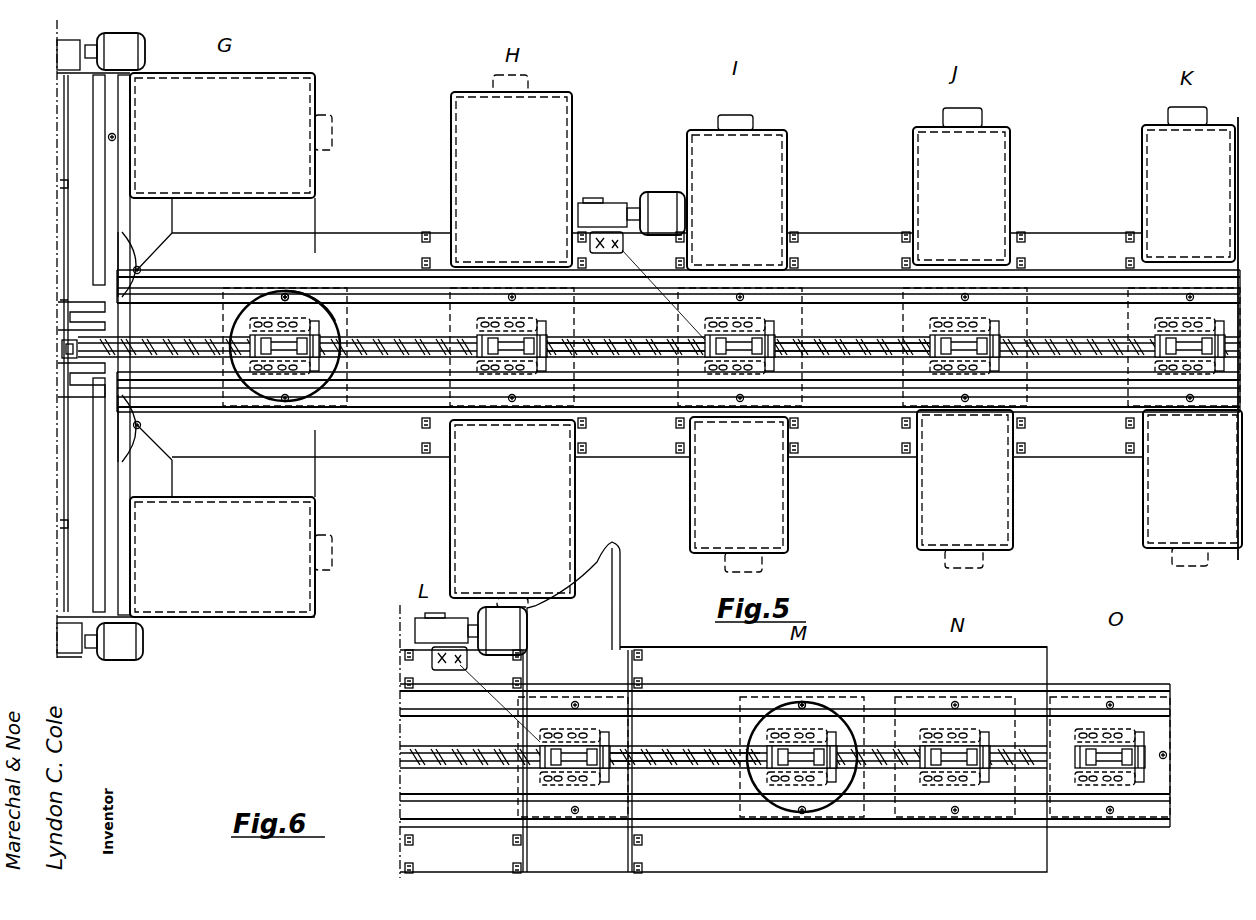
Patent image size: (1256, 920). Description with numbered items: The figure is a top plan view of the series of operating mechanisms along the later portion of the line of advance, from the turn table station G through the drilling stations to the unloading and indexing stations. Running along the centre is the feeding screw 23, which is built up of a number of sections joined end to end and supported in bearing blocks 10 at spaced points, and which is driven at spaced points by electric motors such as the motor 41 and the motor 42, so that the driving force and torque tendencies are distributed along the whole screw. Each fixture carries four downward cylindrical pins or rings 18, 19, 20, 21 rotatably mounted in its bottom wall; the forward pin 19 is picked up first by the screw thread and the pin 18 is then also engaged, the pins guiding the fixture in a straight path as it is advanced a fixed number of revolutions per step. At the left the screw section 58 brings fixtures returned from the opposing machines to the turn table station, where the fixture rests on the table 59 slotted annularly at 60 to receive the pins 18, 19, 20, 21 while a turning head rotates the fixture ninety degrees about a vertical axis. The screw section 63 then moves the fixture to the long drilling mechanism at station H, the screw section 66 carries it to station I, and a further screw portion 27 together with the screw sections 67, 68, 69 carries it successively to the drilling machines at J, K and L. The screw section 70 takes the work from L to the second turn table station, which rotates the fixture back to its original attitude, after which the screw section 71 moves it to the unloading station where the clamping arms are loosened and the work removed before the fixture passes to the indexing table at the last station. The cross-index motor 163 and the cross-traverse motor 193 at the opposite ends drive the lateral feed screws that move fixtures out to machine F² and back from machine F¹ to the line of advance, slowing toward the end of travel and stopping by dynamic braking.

In FIG. 5, the bearing block 10 is at (250, 323).
In FIG. 6, the bearing block 10 is at (612, 741).
In FIG. 5, the pin 18 is at (286, 293).
In FIG. 6, the pin 18 is at (747, 762).
In FIG. 5, the forward pin 19 is at (116, 136).
In FIG. 6, the forward pin 19 is at (850, 745).
In FIG. 5, the pin 20 is at (57, 83).
In FIG. 6, the pin 20 is at (795, 700).
In FIG. 5, the pin 21 is at (57, 190).
In FIG. 6, the pin 21 is at (800, 812).
In FIG. 5, the feeding screw 23 is at (590, 340).
In FIG. 6, the feeding screw 23 is at (700, 750).
In FIG. 5, the shaft 27 is at (808, 340).
In FIG. 5, the motor 41 is at (655, 200).
In FIG. 6, the motor 42 is at (477, 674).
In FIG. 5, the screw section 58 is at (196, 351).
In FIG. 5, the table 59 is at (312, 300).
In FIG. 5, the annular slot 60 is at (337, 322).
In FIG. 5, the screw section 63 is at (393, 348).
In FIG. 5, the screw section 66 is at (618, 341).
In FIG. 5, the screw section 67 is at (857, 340).
In FIG. 5, the screw section 68 is at (1090, 340).
In FIG. 6, the screw section 69 is at (463, 765).
In FIG. 6, the screw section 70 is at (685, 763).
In FIG. 6, the screw section 71 is at (920, 762).
In FIG. 5, the cross-index motor 163 is at (145, 43).
In FIG. 5, the cross-traverse motor 193 is at (145, 648).